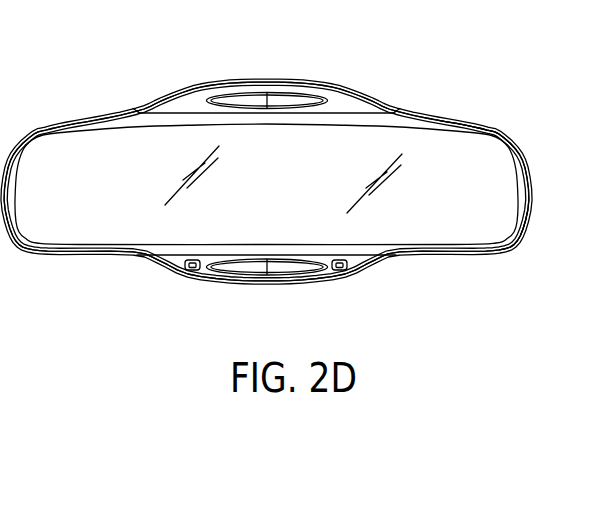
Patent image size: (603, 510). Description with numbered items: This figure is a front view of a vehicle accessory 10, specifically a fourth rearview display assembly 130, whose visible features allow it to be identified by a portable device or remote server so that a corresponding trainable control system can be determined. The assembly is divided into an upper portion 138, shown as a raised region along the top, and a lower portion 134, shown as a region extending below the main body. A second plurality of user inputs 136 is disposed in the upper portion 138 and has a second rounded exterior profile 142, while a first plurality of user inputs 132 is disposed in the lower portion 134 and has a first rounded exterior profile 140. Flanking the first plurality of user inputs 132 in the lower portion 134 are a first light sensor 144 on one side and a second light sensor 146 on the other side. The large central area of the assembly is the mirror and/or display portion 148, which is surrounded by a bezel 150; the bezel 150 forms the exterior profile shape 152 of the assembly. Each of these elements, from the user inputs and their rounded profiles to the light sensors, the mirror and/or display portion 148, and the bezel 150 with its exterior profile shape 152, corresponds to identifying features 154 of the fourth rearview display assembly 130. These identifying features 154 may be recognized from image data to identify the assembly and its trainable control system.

The vehicle accessory 10 is at (432, 64).
The fourth rearview display assembly 130 is at (70, 128).
The first plurality of user inputs 132 is at (287, 267).
The lower portion 134 is at (376, 268).
The second plurality of user inputs 136 is at (290, 98).
The upper portion 138 is at (192, 78).
The first rounded exterior profile 140 is at (323, 97).
The second rounded exterior profile 142 is at (311, 276).
The first light sensor 144 is at (185, 277).
The second light sensor 146 is at (343, 272).
The mirror and/or display portion 148 is at (90, 214).
The bezel 150 is at (505, 137).
The exterior profile shape 152 is at (527, 232).
The identifying features 154 is at (509, 42).